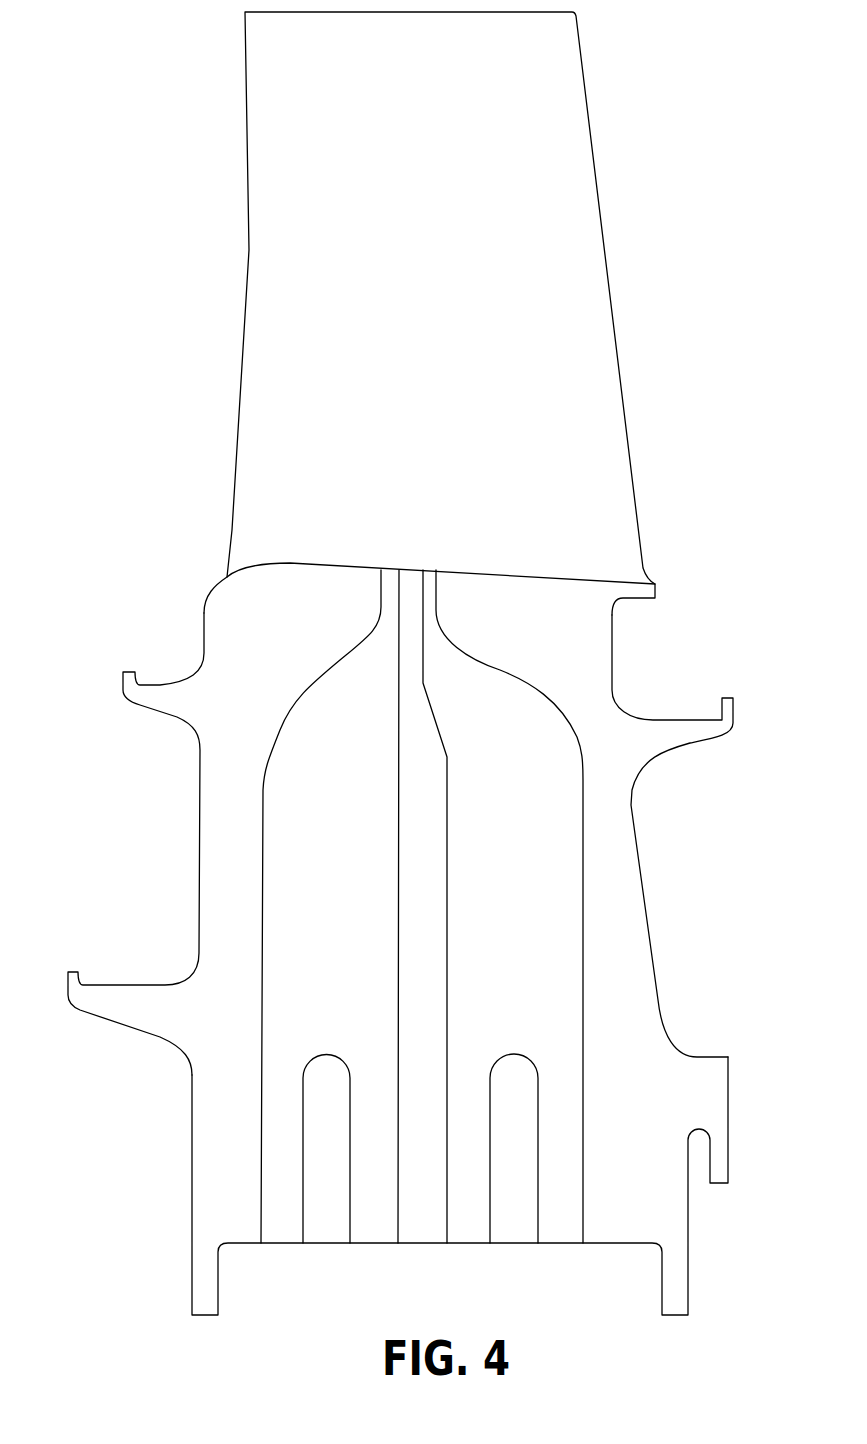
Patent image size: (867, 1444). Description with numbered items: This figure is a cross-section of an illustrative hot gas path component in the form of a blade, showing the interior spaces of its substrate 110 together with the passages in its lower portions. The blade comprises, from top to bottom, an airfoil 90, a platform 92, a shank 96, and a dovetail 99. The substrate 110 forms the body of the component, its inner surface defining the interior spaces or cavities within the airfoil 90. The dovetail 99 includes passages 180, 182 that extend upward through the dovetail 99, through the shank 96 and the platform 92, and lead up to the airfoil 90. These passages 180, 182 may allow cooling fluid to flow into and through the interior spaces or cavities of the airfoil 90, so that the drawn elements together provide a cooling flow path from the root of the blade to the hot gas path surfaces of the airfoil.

The airfoil 90 is at (252, 343).
The platform 92 is at (222, 605).
The substrate 110 is at (202, 760).
The shank 96 is at (610, 882).
The dovetail 99 is at (658, 1195).
The passage 180 is at (231, 906).
The passage 182 is at (317, 863).